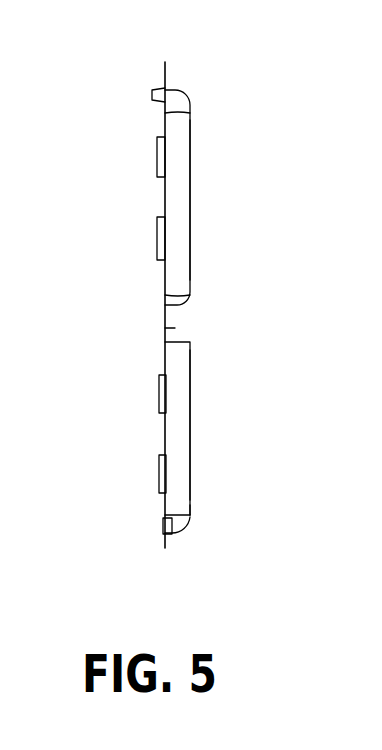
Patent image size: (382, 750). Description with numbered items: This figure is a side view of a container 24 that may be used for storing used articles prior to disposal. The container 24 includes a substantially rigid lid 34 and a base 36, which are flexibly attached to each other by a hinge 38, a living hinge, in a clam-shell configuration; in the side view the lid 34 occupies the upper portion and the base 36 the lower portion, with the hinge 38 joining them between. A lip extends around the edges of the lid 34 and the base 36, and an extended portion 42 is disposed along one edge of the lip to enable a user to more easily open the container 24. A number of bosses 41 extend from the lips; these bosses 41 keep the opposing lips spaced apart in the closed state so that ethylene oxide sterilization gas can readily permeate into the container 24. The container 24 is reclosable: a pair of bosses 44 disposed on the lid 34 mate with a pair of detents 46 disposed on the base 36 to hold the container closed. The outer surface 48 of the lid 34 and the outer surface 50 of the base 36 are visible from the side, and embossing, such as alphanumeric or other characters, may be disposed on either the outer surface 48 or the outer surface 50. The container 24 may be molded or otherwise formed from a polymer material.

The container 24 is at (182, 497).
The lid 34 is at (170, 197).
The base 36 is at (175, 432).
The hinge 38 is at (165, 317).
The bosses 41 is at (158, 160).
The extended portion 42 is at (160, 70).
The bosses 44 is at (151, 97).
The detents 46 is at (175, 535).
The outer surface of the lid 48 is at (182, 140).
The outer surface of the base 50 is at (180, 377).